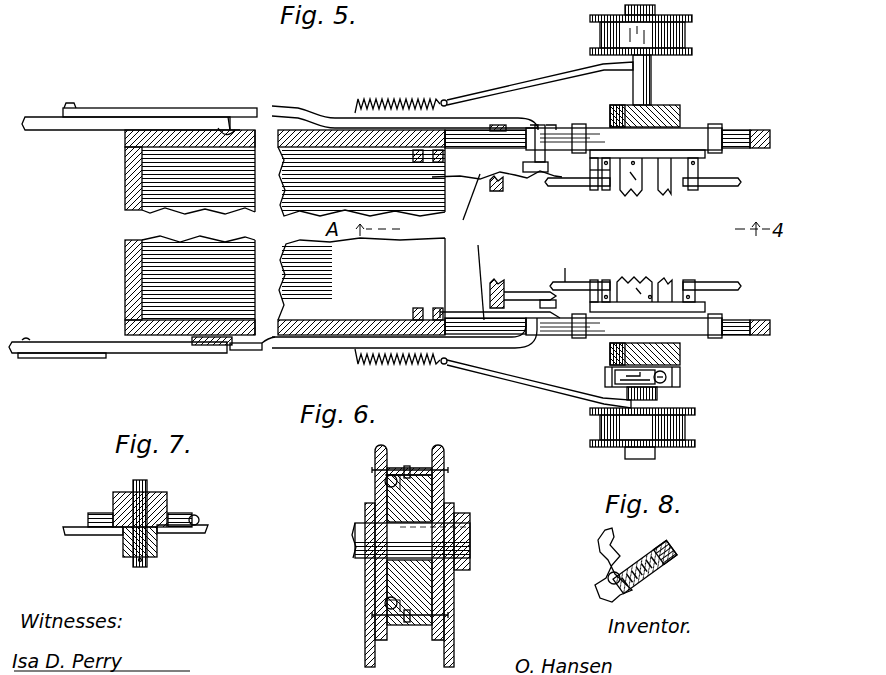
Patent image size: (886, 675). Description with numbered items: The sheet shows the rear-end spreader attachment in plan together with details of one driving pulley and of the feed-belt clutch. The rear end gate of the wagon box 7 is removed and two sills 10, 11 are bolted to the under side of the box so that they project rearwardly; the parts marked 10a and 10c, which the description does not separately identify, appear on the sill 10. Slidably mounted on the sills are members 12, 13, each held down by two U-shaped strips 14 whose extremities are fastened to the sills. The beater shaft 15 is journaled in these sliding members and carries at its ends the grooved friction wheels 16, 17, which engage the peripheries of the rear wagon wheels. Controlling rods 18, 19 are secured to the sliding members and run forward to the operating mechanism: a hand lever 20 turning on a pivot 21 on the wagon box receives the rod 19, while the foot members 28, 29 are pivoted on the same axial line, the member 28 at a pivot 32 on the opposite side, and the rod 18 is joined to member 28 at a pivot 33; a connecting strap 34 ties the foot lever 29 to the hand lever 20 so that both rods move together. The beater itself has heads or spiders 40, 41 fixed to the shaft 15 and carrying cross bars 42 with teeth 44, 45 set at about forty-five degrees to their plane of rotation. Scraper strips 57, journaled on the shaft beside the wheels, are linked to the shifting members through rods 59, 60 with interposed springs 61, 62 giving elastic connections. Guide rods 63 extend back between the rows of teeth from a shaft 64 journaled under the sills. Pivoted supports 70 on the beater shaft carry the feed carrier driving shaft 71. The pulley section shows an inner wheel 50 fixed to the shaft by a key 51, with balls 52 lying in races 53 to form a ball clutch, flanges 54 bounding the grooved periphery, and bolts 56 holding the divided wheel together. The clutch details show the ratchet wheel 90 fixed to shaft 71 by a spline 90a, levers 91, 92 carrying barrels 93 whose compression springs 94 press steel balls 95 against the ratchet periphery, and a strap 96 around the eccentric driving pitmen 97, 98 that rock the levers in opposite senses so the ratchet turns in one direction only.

In FIG. 5, the wagon box 7 is at (285, 232).
In FIG. 5, the sill 10 is at (482, 150).
In FIG. 5, the slide bar plate 10a is at (472, 247).
In FIG. 5, the hanger bracket 10c is at (540, 125).
In FIG. 5, the sill 11 is at (490, 326).
In FIG. 5, the slidably mounted member 12 is at (690, 132).
In FIG. 5, the slidably mounted member 13 is at (690, 326).
In FIG. 5, the U-shaped strip 14 is at (580, 118).
In FIG. 5, the beater shaft 15 is at (652, 73).
In FIG. 6, the beater shaft 15 is at (472, 545).
In FIG. 5, the grooved friction wheel 16 is at (680, 35).
In FIG. 6, the grooved friction wheel 16 is at (374, 490).
In FIG. 5, the grooved friction wheel 17 is at (695, 425).
In FIG. 5, the controlling rod 18 is at (330, 118).
In FIG. 5, the beater controlling rod 19 is at (338, 350).
In FIG. 5, the hand lever 20 is at (256, 352).
In FIG. 5, the pivot 21 is at (218, 356).
In FIG. 5, the pivoted member 28 is at (115, 122).
In FIG. 5, the foot lever 29 is at (135, 356).
In FIG. 5, the pivot 32 is at (235, 130).
In FIG. 5, the pivot 33 is at (75, 95).
In FIG. 5, the connecting strap 34 is at (80, 360).
In FIG. 5, the beater head or spider 40 is at (668, 172).
In FIG. 5, the beater head or spider 41 is at (665, 300).
In FIG. 5, the cross bar 42 is at (698, 163).
In FIG. 5, the teeth 44 is at (741, 184).
In FIG. 5, the teeth 45 is at (565, 282).
In FIG. 6, the inner wheel 50 is at (440, 603).
In FIG. 6, the key 51 is at (472, 566).
In FIG. 6, the ball 52 is at (385, 478).
In FIG. 6, the ball race 53 is at (390, 476).
In FIG. 6, the flange 54 is at (432, 468).
In FIG. 6, the bolt 56 is at (449, 470).
In FIG. 5, the scraper strip 57 is at (660, 410).
In FIG. 6, the scraper strip 57 is at (455, 632).
In FIG. 5, the rod 59 is at (535, 385).
In FIG. 5, the rod 60 is at (530, 76).
In FIG. 5, the spring 61 is at (415, 362).
In FIG. 5, the spring 62 is at (410, 100).
In FIG. 5, the guide rod 63 is at (535, 168).
In FIG. 5, the shaft 64 is at (497, 192).
In FIG. 5, the pivoted support 70 is at (672, 110).
In FIG. 7, the pivoted support 70 is at (115, 495).
In FIG. 7, the feed carrier driving shaft 71 is at (138, 480).
In FIG. 7, the ratchet wheel 90 is at (170, 505).
In FIG. 8, the ratchet wheel 90 is at (606, 545).
In FIG. 7, the spline 90a is at (158, 552).
In FIG. 7, the lever 91 is at (182, 534).
In FIG. 7, the lever 92 is at (78, 536).
In FIG. 7, the barrel or box 93 is at (92, 513).
In FIG. 8, the barrel or box 93 is at (665, 580).
In FIG. 8, the compression spring 94 is at (640, 588).
In FIG. 8, the steel ball 95 is at (608, 574).
In FIG. 5, the strap 96 is at (612, 372).
In FIG. 5, the pitman 97 is at (682, 377).
In FIG. 5, the pitman 98 is at (616, 382).